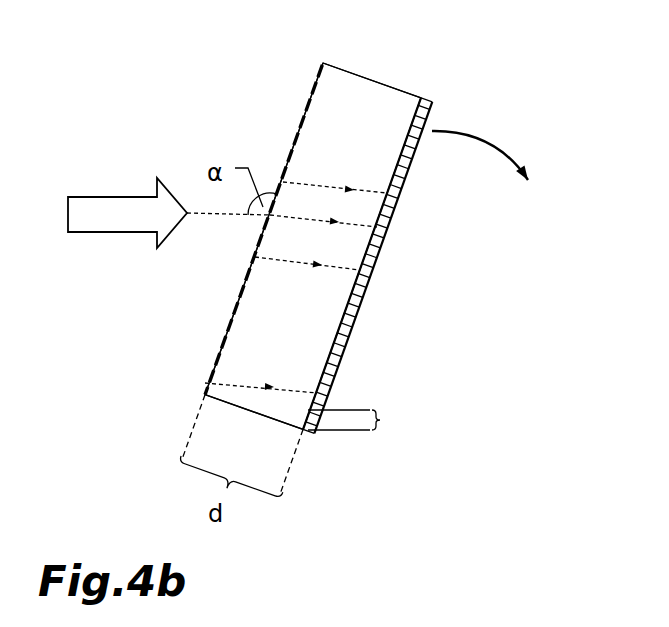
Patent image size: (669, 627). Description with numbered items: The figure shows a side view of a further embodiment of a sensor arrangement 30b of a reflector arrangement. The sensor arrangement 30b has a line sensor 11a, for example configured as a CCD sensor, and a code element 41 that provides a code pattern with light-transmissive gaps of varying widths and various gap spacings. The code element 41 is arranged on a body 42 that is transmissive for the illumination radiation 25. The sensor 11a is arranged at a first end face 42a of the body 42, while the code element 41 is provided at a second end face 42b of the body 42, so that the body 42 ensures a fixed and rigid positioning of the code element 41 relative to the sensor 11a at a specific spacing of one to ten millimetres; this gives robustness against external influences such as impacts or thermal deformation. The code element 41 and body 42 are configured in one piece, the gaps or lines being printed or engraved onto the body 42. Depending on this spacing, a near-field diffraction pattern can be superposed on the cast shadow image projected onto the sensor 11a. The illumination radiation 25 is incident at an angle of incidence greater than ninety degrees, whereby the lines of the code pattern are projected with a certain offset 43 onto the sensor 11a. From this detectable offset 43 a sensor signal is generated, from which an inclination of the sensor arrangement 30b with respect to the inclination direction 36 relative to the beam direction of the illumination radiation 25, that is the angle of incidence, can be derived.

The sensor arrangement 30b is at (433, 67).
The body 42 is at (318, 242).
The code element 41 is at (263, 230).
The second end face 42b is at (223, 332).
The first end face 42a is at (256, 426).
The line sensor 11a is at (383, 266).
The offset 43 is at (365, 424).
The inclination direction 36 is at (503, 153).
The illumination radiation 25 is at (155, 206).